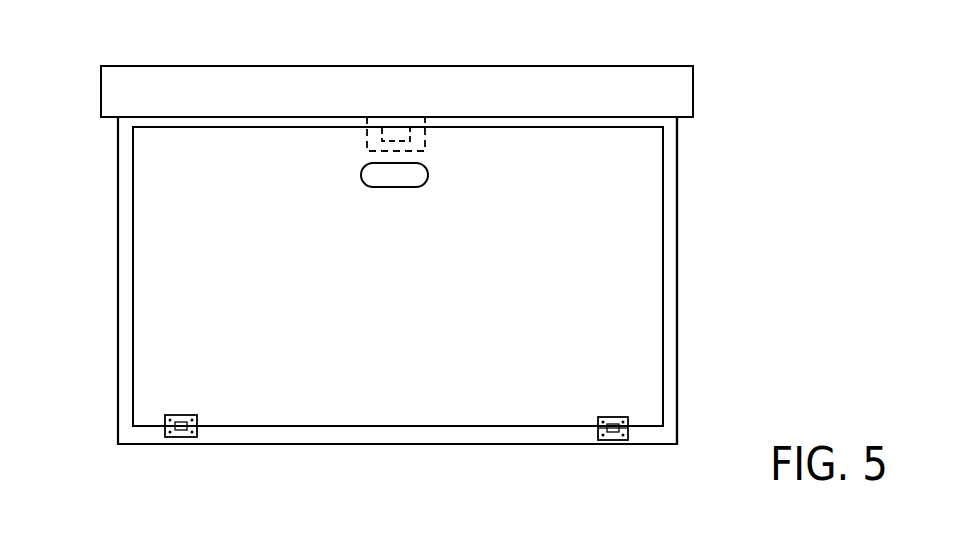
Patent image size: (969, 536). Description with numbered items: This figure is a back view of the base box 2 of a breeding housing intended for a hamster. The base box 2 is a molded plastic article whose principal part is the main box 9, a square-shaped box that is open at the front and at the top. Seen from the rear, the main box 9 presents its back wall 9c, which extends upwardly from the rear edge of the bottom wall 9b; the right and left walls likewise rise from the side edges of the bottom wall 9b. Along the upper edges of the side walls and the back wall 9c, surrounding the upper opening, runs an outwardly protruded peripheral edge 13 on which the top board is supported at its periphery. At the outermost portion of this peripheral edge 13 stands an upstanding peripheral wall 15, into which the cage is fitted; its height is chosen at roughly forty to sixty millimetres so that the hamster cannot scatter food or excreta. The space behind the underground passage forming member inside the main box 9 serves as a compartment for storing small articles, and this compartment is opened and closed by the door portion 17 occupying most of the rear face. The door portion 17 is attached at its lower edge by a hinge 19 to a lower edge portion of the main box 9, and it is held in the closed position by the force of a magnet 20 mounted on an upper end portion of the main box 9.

The base box 2 is at (70, 124).
The main box 9 is at (121, 228).
The bottom wall 9b is at (393, 445).
The back wall 9c is at (672, 268).
The outwardly protruded peripheral edge 13 is at (682, 118).
The upstanding peripheral wall 15 is at (583, 90).
The door portion 17 is at (427, 310).
The hinge 19 is at (182, 437).
The magnet 20 is at (414, 143).